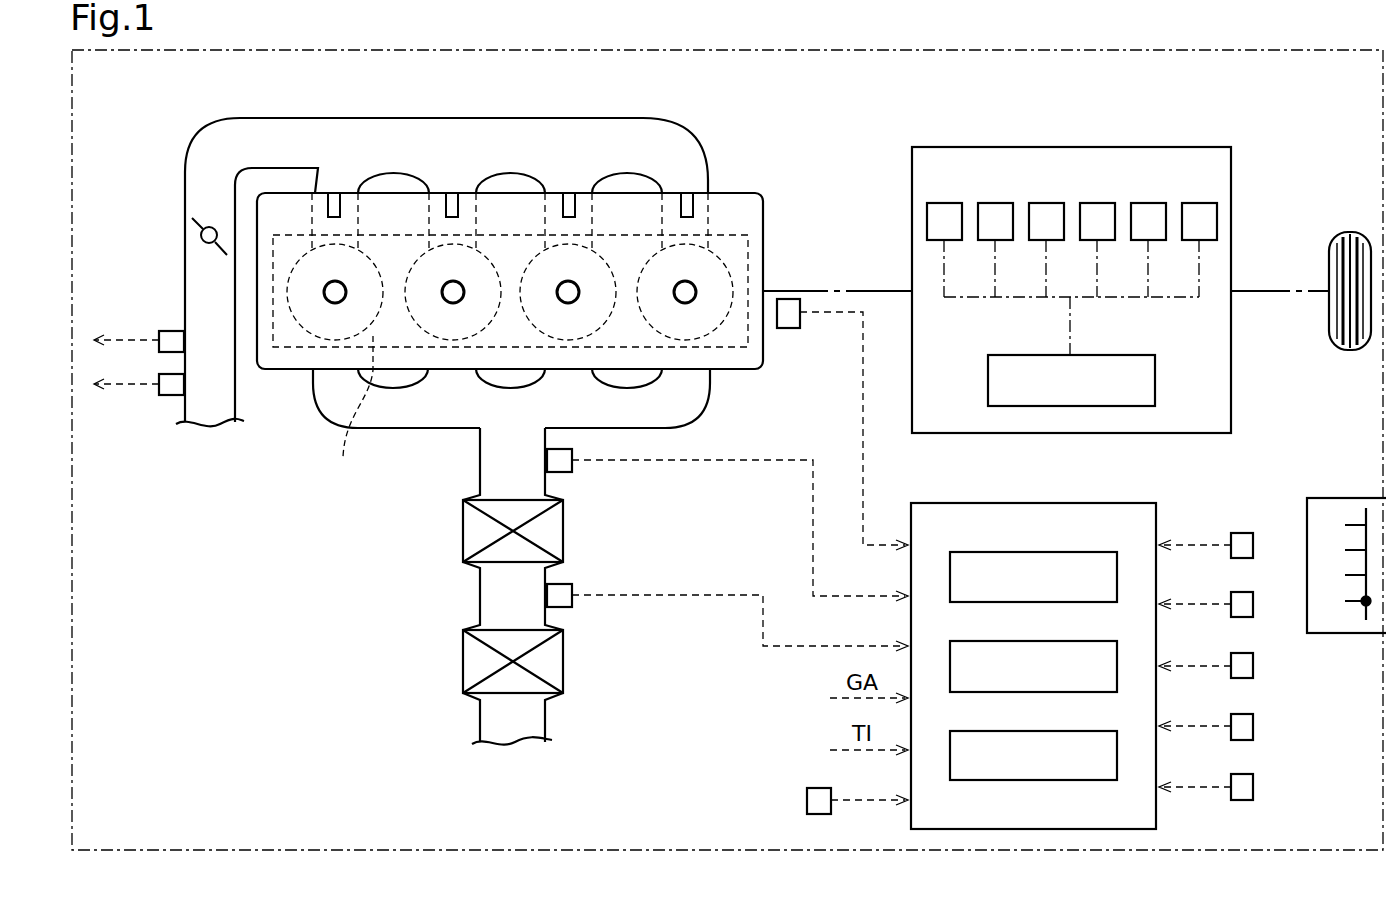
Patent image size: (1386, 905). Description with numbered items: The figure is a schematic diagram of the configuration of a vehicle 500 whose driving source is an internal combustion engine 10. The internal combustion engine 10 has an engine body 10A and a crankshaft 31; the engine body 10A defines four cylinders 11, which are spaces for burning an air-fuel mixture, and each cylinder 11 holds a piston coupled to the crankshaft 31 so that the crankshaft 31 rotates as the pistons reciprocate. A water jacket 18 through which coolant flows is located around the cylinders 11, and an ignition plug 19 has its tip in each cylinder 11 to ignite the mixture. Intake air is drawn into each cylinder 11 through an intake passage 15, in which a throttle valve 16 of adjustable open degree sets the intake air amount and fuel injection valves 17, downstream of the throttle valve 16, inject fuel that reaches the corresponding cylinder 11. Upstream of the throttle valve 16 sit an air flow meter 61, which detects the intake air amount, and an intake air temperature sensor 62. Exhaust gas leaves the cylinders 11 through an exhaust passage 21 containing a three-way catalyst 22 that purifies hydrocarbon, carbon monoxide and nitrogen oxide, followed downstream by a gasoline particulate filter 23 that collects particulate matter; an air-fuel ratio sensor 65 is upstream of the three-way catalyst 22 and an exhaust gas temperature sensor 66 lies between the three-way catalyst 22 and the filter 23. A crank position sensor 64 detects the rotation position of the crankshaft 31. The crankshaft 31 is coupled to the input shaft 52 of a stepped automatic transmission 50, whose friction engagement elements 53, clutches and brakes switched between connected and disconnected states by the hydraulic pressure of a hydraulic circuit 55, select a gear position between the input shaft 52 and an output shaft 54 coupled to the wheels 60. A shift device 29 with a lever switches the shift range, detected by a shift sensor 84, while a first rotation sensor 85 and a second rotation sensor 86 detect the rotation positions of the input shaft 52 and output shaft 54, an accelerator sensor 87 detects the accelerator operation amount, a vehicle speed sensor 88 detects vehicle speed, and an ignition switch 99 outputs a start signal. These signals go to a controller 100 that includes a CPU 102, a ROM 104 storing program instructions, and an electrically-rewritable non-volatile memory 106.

The internal combustion engine 10 is at (396, 634).
The engine body 10A is at (288, 370).
The cylinders 11 is at (312, 257).
The intake passage 15 is at (277, 122).
The throttle valve 16 is at (207, 226).
The fuel injection valves 17 is at (334, 193).
The water jacket 18 is at (351, 412).
The ignition plugs 19 is at (442, 297).
The exhaust passage 21 is at (702, 396).
The three-way catalyst 22 is at (565, 536).
The gasoline particulate filter 23 is at (565, 668).
The shift device 29 is at (1345, 497).
The crankshaft 31 is at (797, 288).
The automatic transmission 50 is at (1071, 257).
The input shaft 52 is at (893, 287).
The friction engagement elements 53 is at (1215, 190).
The output shaft 54 is at (1257, 288).
The hydraulic circuit 55 is at (1157, 378).
The wheels 60 is at (1345, 231).
The air flow meter 61 is at (170, 396).
The intake air temperature sensor 62 is at (170, 331).
The crank position sensor 64 is at (784, 330).
The air-fuel ratio sensor 65 is at (578, 474).
The exhaust gas temperature sensor 66 is at (578, 608).
The shift sensor 84 is at (1242, 533).
The first rotation sensor 85 is at (1242, 592).
The second rotation sensor 86 is at (1242, 653).
The accelerator sensor 87 is at (1242, 714).
The vehicle speed sensor 88 is at (1242, 774).
The ignition switch 99 is at (807, 800).
The controller 100 is at (1033, 649).
The CPU 102 is at (1048, 552).
The ROM 104 is at (1048, 641).
The non-volatile memory 106 is at (1048, 731).
The vehicle 500 is at (972, 852).